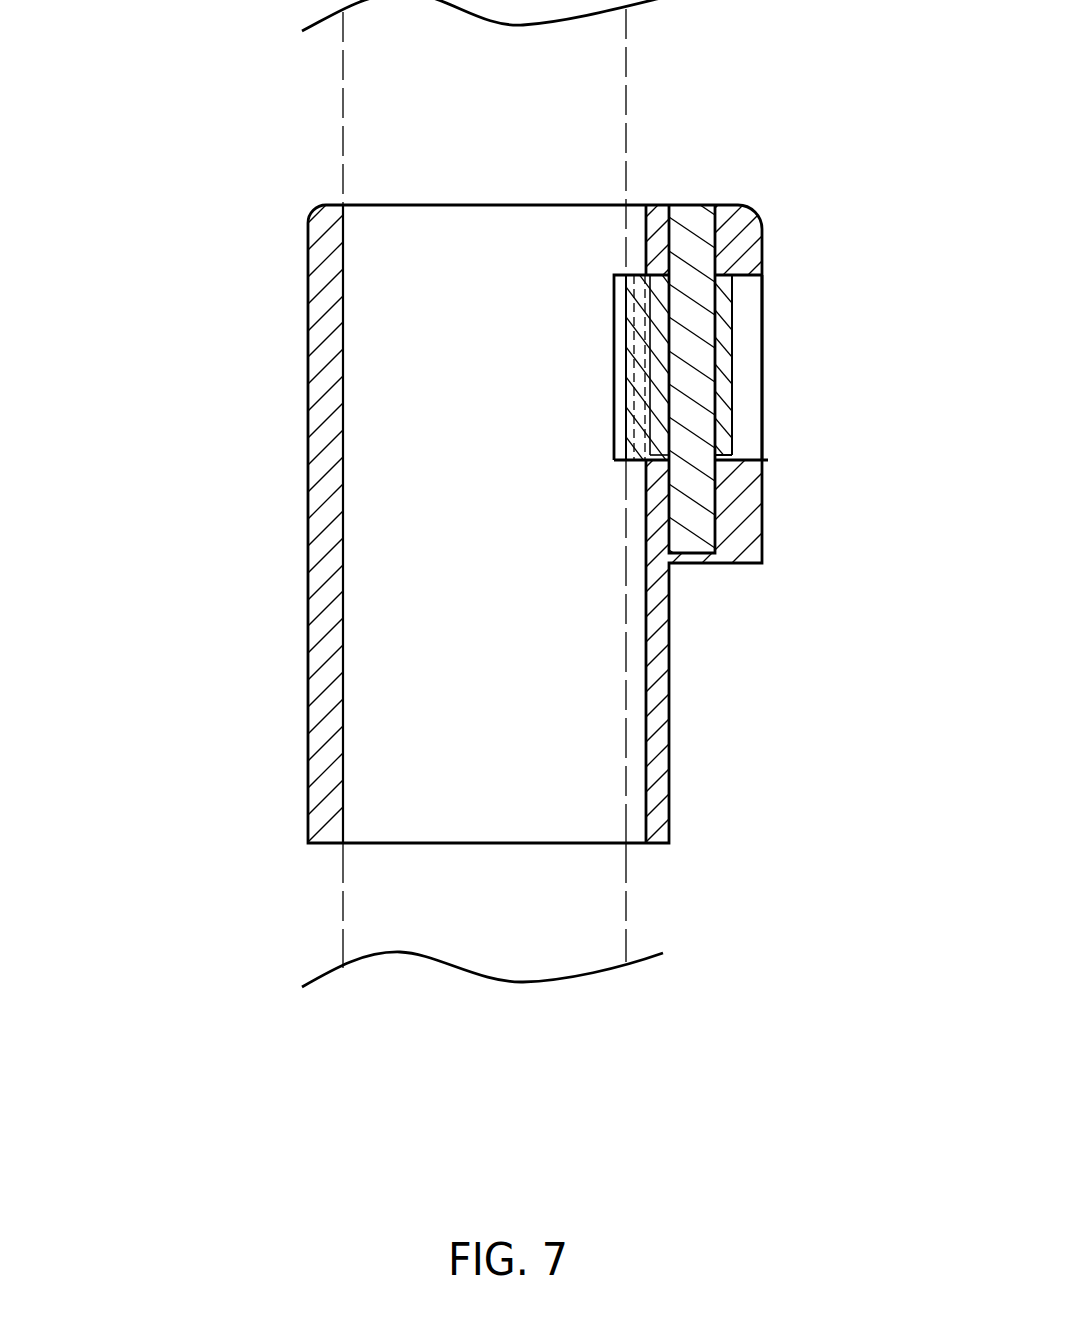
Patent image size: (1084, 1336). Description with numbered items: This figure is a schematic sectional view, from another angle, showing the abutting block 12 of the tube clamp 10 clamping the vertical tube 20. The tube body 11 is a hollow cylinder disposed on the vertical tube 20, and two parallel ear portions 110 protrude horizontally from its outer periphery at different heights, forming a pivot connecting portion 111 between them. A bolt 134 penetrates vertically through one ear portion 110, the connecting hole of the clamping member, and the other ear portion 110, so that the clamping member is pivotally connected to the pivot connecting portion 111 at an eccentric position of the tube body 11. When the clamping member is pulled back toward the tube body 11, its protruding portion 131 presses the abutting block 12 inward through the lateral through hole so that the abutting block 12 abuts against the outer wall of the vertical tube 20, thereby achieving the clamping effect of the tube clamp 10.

The tube clamp 10 is at (542, 490).
The tube body 11 is at (337, 355).
The abutting block 12 is at (623, 277).
The vertical tube 20 is at (383, 82).
The ear portion 110 is at (737, 500).
The pivot connecting portion 111 is at (740, 407).
The protruding portion 131 is at (655, 335).
The bolt 134 is at (687, 245).